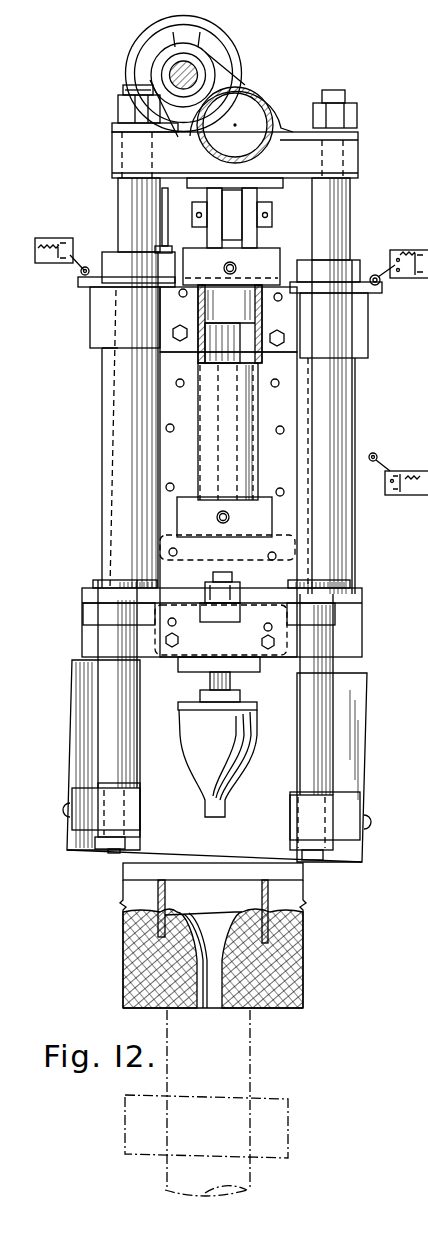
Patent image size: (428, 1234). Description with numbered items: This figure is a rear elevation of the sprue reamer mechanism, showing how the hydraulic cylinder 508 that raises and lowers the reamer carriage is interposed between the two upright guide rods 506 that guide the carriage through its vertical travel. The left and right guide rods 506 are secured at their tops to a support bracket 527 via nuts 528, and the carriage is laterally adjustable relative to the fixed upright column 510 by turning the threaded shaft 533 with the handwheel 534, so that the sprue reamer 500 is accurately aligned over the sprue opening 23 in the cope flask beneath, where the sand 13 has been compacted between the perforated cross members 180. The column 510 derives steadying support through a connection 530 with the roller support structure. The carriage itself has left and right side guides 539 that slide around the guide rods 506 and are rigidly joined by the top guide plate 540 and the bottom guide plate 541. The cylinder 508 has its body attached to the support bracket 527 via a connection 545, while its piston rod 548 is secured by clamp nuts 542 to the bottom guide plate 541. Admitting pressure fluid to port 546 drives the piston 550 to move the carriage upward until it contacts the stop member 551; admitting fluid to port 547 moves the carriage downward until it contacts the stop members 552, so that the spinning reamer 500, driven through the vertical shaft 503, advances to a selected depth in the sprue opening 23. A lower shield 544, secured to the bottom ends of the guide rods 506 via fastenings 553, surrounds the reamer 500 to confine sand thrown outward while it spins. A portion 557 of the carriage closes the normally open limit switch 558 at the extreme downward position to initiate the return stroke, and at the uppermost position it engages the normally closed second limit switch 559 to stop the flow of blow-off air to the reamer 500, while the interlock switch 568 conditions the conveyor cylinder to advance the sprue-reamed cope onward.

The handwheel 534 is at (138, 37).
The threaded shaft 533 is at (197, 66).
The nuts 528 is at (120, 110).
The support bracket 527 is at (360, 165).
The guide rods 506 is at (120, 194).
The interlock switch 568 is at (52, 237).
The stop member 551 is at (160, 217).
The connection 545 is at (272, 221).
The port 547 is at (224, 267).
The second limit switch 559 is at (407, 250).
The portion 557 is at (381, 290).
The top guide plate 540 is at (90, 320).
The piston 550 is at (210, 312).
The piston rod 548 is at (258, 364).
The hydraulic cylinder 508 is at (196, 426).
The side guides 539 is at (102, 448).
The limit switch 558 is at (402, 495).
The port 546 is at (217, 518).
The clamp nuts 542 is at (202, 615).
The bottom guide plate 541 is at (82, 618).
The vertical shaft 503 is at (233, 682).
The lower shield 544 is at (71, 710).
The sprue reamer 500 is at (192, 728).
The stop members 552 is at (140, 792).
The fastenings 553 is at (370, 822).
The perforated cross members 180 is at (160, 897).
The sand 13 is at (300, 958).
The sprue opening 23 is at (215, 1002).
The upright column 510 is at (252, 1079).
The connection 530 is at (290, 1138).